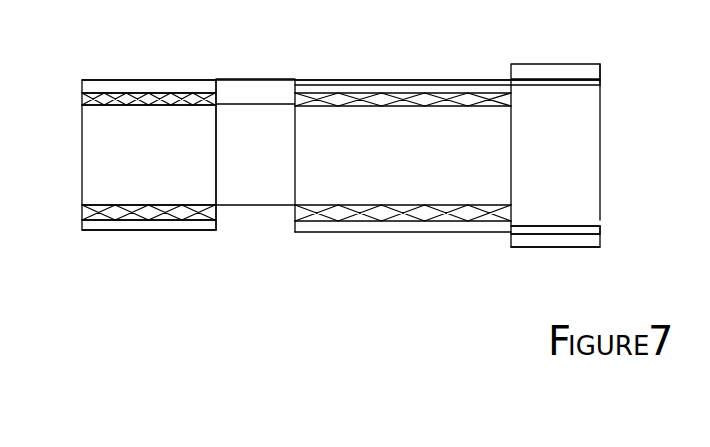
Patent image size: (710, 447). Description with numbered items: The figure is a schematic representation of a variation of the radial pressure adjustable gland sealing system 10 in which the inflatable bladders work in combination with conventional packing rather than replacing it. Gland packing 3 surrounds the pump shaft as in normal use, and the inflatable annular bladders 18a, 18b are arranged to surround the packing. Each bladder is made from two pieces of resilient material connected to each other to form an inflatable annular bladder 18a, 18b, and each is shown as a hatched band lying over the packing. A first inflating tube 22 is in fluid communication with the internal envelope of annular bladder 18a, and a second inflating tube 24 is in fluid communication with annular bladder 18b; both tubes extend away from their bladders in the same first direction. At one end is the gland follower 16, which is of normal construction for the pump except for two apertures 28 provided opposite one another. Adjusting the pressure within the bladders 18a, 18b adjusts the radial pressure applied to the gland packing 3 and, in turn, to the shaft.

The radial pressure adjustable gland sealing system 10 is at (237, 283).
The gland packing 3 is at (82, 96).
The gland follower 16 is at (604, 164).
The inflatable annular bladder 18a is at (145, 80).
The inflatable annular bladder 18b is at (408, 82).
The first inflating tube 22 is at (345, 80).
The second inflating tube 24 is at (548, 237).
The apertures 28 is at (598, 83).